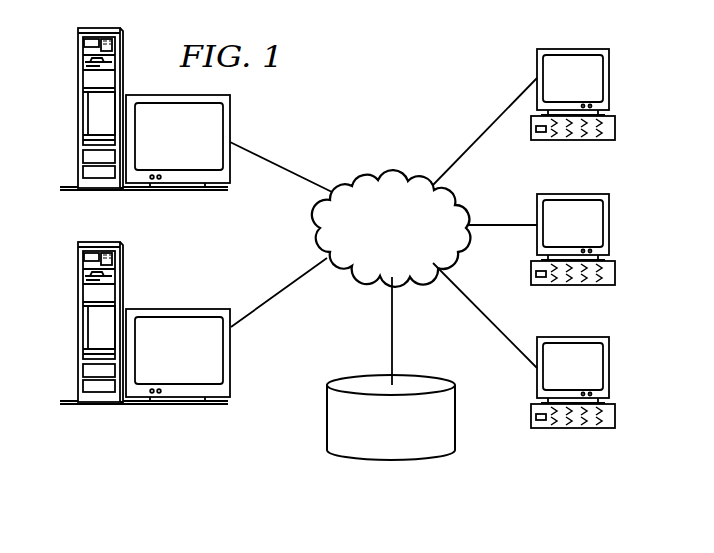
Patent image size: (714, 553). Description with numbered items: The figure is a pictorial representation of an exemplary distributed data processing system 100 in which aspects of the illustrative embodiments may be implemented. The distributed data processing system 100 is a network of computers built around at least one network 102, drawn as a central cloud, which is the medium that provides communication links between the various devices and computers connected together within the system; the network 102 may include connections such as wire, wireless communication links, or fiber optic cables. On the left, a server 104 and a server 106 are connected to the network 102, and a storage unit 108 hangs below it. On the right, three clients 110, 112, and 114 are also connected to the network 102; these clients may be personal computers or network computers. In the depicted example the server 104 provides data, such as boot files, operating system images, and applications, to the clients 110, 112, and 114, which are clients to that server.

The distributed data processing system 100 is at (445, 54).
The network 102 is at (362, 173).
The server 104 is at (78, 110).
The server 106 is at (78, 323).
The storage unit 108 is at (375, 460).
The client 110 is at (610, 80).
The client 112 is at (610, 225).
The client 114 is at (610, 368).